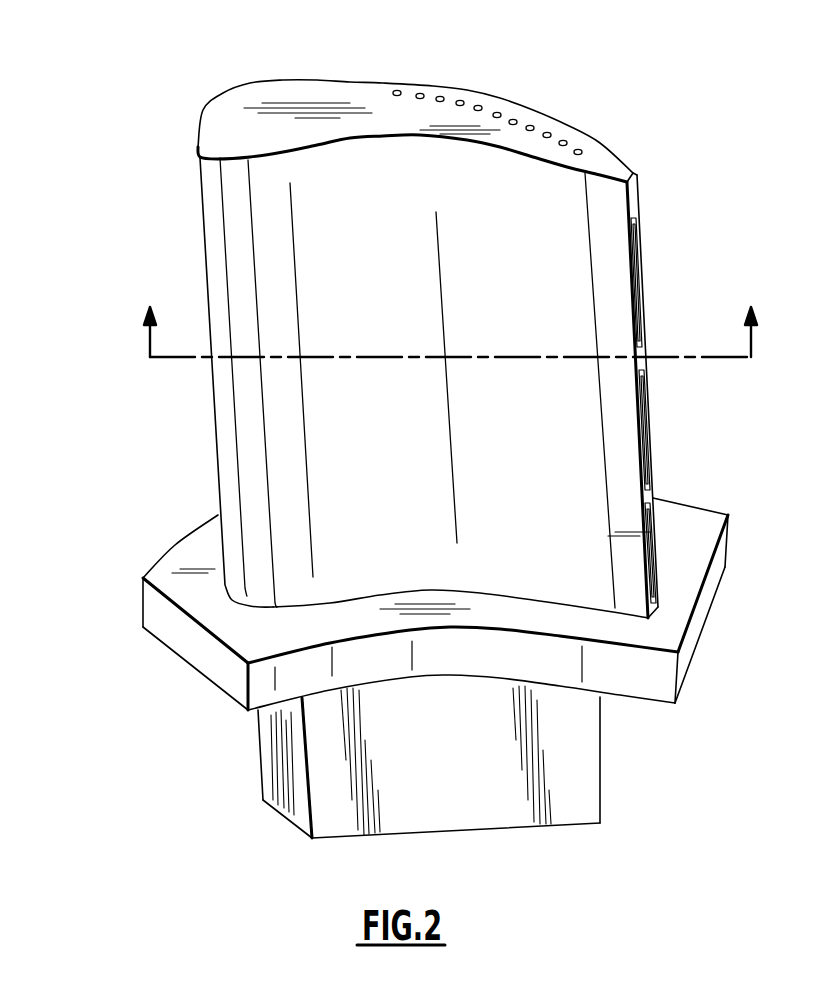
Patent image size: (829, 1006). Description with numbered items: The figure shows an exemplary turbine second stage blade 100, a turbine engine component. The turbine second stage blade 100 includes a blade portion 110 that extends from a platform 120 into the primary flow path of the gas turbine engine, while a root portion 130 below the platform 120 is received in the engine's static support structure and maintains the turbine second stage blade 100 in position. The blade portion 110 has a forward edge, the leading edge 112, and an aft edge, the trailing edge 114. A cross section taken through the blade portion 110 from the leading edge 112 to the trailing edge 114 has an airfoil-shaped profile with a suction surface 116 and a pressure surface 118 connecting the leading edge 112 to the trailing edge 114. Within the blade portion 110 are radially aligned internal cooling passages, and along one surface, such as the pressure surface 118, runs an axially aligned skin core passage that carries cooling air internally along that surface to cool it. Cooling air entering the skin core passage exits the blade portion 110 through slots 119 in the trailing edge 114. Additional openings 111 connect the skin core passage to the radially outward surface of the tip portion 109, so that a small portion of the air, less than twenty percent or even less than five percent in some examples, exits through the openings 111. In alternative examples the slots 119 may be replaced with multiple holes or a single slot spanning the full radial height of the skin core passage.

The turbine second stage blade 100 is at (405, 422).
The tip portion 109 is at (313, 99).
The blade portion 110 is at (503, 192).
The openings 111 is at (461, 101).
The leading edge 112 is at (200, 208).
The trailing edge 114 is at (640, 270).
The suction surface 116 is at (388, 82).
The pressure surface 118 is at (400, 138).
The slots 119 is at (640, 335).
The platform 120 is at (677, 578).
The root portion 130 is at (575, 796).